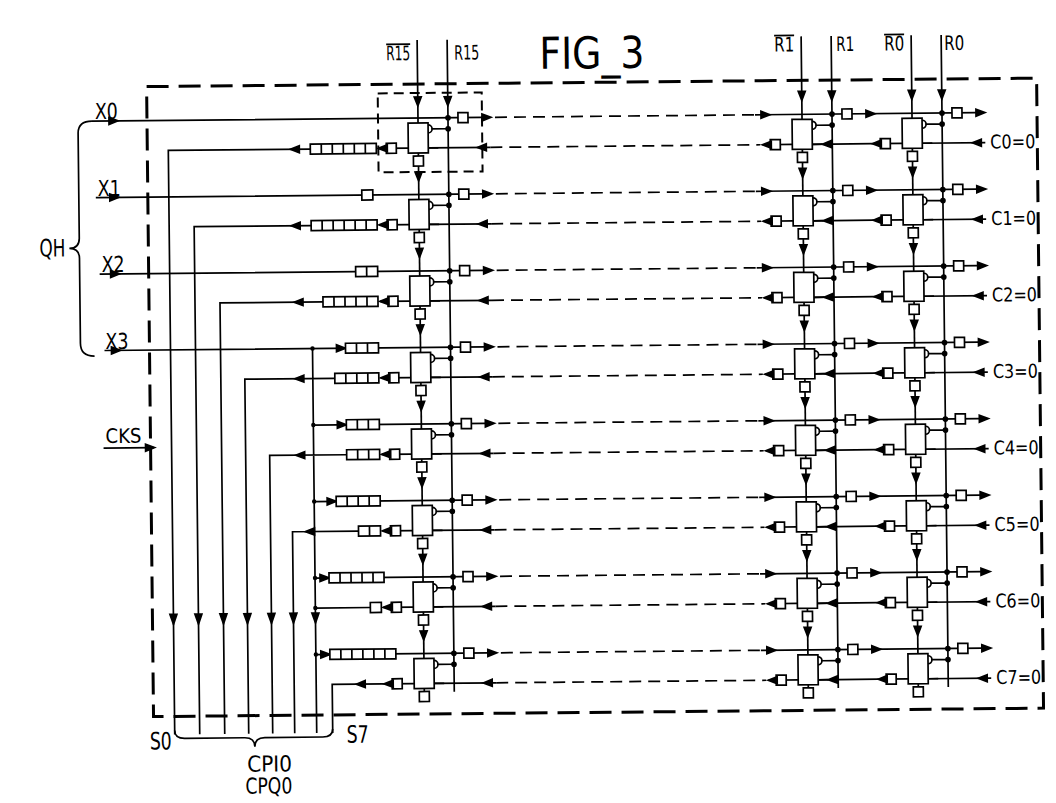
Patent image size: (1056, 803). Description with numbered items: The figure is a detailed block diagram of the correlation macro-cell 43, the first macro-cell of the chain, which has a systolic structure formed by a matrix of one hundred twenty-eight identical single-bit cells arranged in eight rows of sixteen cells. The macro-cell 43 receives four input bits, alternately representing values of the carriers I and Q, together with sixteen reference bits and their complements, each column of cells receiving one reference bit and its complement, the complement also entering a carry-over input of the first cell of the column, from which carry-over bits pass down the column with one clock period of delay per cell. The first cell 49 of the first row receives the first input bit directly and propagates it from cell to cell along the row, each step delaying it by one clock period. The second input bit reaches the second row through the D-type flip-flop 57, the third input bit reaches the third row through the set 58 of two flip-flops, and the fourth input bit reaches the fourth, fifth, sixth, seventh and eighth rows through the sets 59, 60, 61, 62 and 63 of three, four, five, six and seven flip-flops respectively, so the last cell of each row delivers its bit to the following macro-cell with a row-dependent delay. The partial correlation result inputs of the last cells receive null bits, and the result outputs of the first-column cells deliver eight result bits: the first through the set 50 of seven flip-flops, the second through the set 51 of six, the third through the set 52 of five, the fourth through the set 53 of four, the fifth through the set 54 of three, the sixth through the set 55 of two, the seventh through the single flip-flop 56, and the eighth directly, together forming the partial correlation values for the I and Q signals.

The macro-cell 43 is at (285, 84).
The first cell 49 is at (378, 108).
The set of seven D-type flip-flops 50 is at (328, 143).
The set of six D-type flip-flops 51 is at (338, 220).
The set of five D-type flip-flops 52 is at (338, 296).
The set of four D-type flip-flops 53 is at (356, 372).
The set of three D-type flip-flops 54 is at (356, 449).
The set of two D-type flip-flops 55 is at (368, 536).
The D-type flip-flop 56 is at (371, 612).
The D-type flip-flop 57 is at (372, 190).
The set of two D-type flip-flops 58 is at (362, 266).
The set of three D-type flip-flops 59 is at (362, 342).
The set of four D-type flip-flops 60 is at (358, 419).
The set of five D-type flip-flops 61 is at (364, 496).
The set of six D-type flip-flops 62 is at (366, 572).
The set of seven D-type flip-flops 63 is at (372, 648).